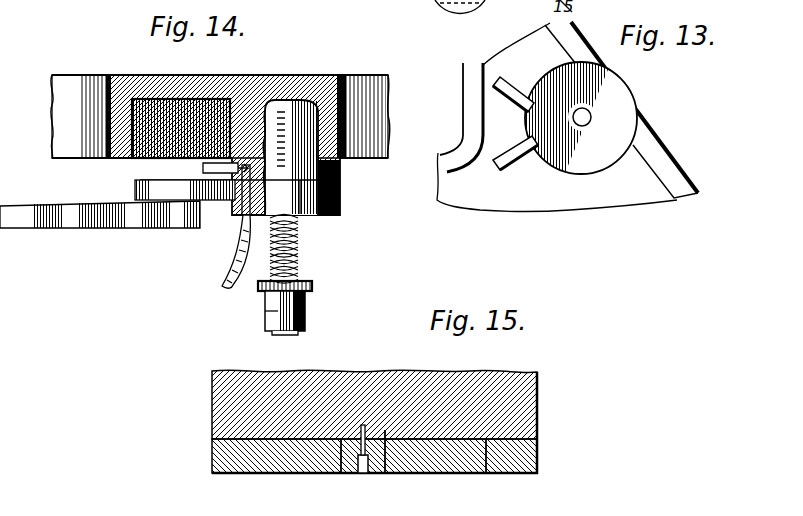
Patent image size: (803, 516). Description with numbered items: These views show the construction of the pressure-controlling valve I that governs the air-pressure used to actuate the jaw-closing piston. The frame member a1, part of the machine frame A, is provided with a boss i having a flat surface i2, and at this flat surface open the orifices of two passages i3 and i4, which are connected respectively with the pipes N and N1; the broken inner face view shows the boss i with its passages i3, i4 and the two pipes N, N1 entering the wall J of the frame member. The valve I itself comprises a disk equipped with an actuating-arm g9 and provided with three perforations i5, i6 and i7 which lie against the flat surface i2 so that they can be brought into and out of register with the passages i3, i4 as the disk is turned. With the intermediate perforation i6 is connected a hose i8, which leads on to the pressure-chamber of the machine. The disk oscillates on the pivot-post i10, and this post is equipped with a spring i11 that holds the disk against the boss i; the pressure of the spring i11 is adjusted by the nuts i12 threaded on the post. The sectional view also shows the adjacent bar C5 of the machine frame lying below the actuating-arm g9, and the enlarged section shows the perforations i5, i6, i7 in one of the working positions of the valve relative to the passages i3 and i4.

In FIG. 14, the frame / support plate A is at (220, 99).
In FIG. 13, the frame / support plate A is at (557, 136).
In FIG. 14, the frame member a1 is at (267, 82).
In FIG. 13, the frame member a1 is at (621, 110).
In FIG. 15, the frame member a1 is at (537, 375).
In FIG. 14, the actuating-arm g9 is at (170, 190).
In FIG. 14, the pipe N is at (215, 168).
In FIG. 13, the pipe N is at (502, 172).
In FIG. 13, the pipe N1 is at (513, 80).
In FIG. 14, the bar C5 is at (73, 230).
In FIG. 14, the valve I is at (340, 205).
In FIG. 15, the valve I is at (537, 458).
In FIG. 13, the wall J is at (461, 117).
In FIG. 14, the boss i is at (340, 173).
In FIG. 13, the boss i is at (581, 120).
In FIG. 15, the boss i is at (537, 408).
In FIG. 13, the flat surface i2 is at (620, 97).
In FIG. 15, the flat surface i2 is at (486, 474).
In FIG. 13, the passage i3 is at (545, 127).
In FIG. 15, the passage i3 is at (385, 430).
In FIG. 13, the passage i4 is at (542, 116).
In FIG. 15, the passage i4 is at (362, 425).
In FIG. 15, the perforation i5 is at (340, 474).
In FIG. 14, the intermediate perforation i6 is at (247, 190).
In FIG. 15, the intermediate perforation i6 is at (361, 474).
In FIG. 15, the perforation i7 is at (387, 474).
In FIG. 14, the hose i8 is at (238, 250).
In FIG. 14, the pivot-post i10 is at (298, 230).
In FIG. 14, the spring i11 is at (298, 262).
In FIG. 14, the nuts i12 is at (305, 300).